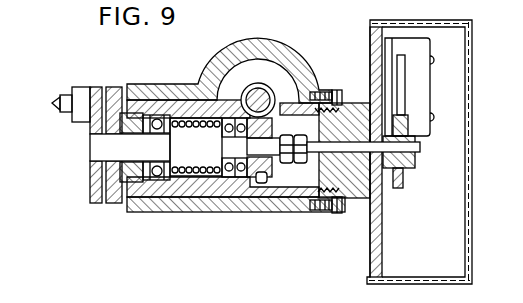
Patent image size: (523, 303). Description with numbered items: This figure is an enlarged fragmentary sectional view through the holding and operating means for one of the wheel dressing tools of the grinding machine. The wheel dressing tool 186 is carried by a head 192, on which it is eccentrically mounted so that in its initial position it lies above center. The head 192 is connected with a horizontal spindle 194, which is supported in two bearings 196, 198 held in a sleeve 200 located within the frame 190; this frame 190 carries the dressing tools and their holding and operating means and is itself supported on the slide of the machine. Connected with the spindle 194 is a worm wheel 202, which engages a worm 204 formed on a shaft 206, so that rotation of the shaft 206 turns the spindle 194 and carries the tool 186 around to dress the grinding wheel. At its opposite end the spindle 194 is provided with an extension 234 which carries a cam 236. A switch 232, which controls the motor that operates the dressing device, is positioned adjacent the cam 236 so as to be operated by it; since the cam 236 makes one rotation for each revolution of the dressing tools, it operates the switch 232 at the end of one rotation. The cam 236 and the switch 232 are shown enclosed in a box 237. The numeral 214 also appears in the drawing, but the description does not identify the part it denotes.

The wheel dressing tool 186 is at (57, 93).
The frame 190 is at (290, 207).
The head 192 is at (97, 87).
The spindle 194 is at (115, 148).
The bearing 196 is at (158, 177).
The bearing 198 is at (232, 172).
The sleeve 200 is at (180, 86).
The worm wheel 202 is at (258, 183).
The worm 204 is at (272, 97).
The shaft 206 is at (250, 85).
The base 214 is at (433, 299).
The switch 232 is at (422, 93).
The extension 234 is at (418, 153).
The cam 236 is at (405, 184).
The box 237 is at (474, 70).